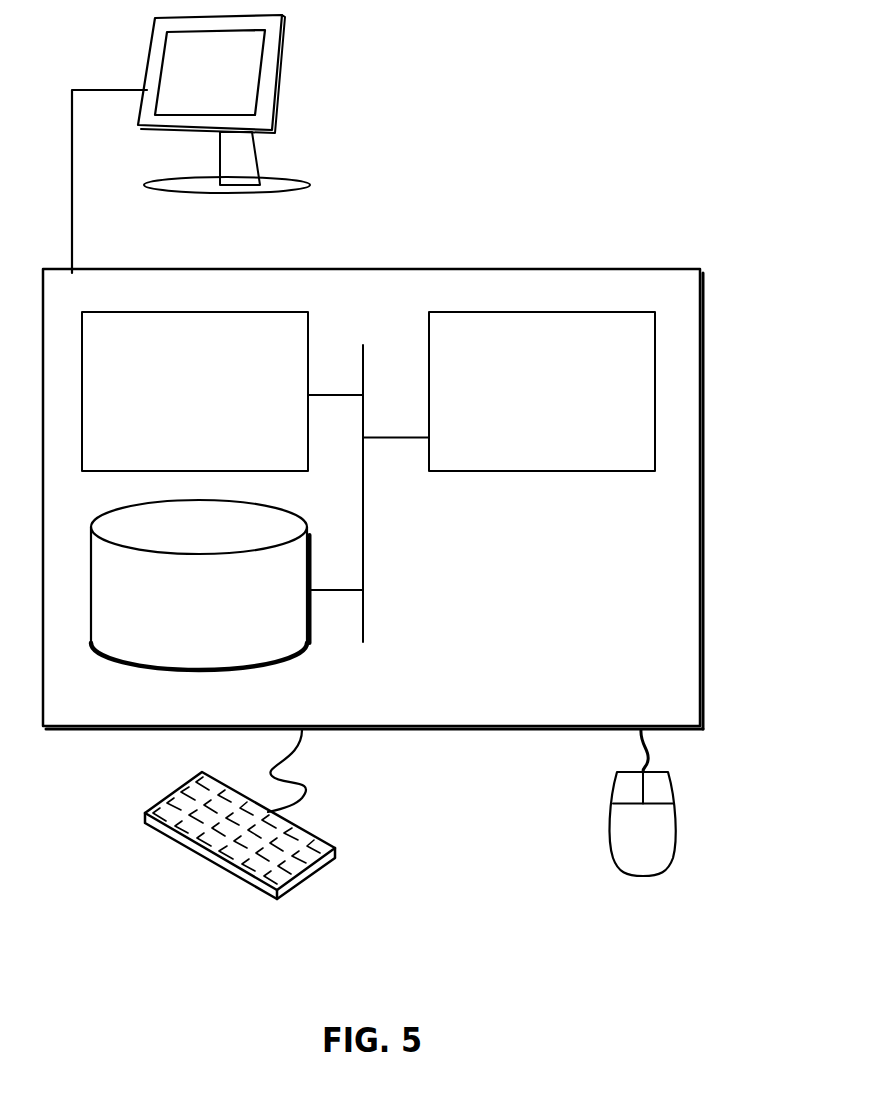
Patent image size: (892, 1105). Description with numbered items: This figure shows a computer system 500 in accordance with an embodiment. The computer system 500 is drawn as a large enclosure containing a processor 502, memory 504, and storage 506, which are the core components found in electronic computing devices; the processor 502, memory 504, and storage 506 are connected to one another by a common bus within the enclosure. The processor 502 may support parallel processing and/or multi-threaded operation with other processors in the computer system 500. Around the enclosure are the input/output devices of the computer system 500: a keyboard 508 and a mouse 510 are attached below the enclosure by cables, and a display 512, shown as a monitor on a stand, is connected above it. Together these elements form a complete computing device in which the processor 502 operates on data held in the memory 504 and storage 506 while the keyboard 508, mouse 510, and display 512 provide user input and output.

The computer system 500 is at (418, 248).
The processor 502 is at (524, 405).
The memory 504 is at (174, 402).
The storage 506 is at (181, 617).
The keyboard 508 is at (163, 835).
The mouse 510 is at (622, 847).
The display 512 is at (191, 144).